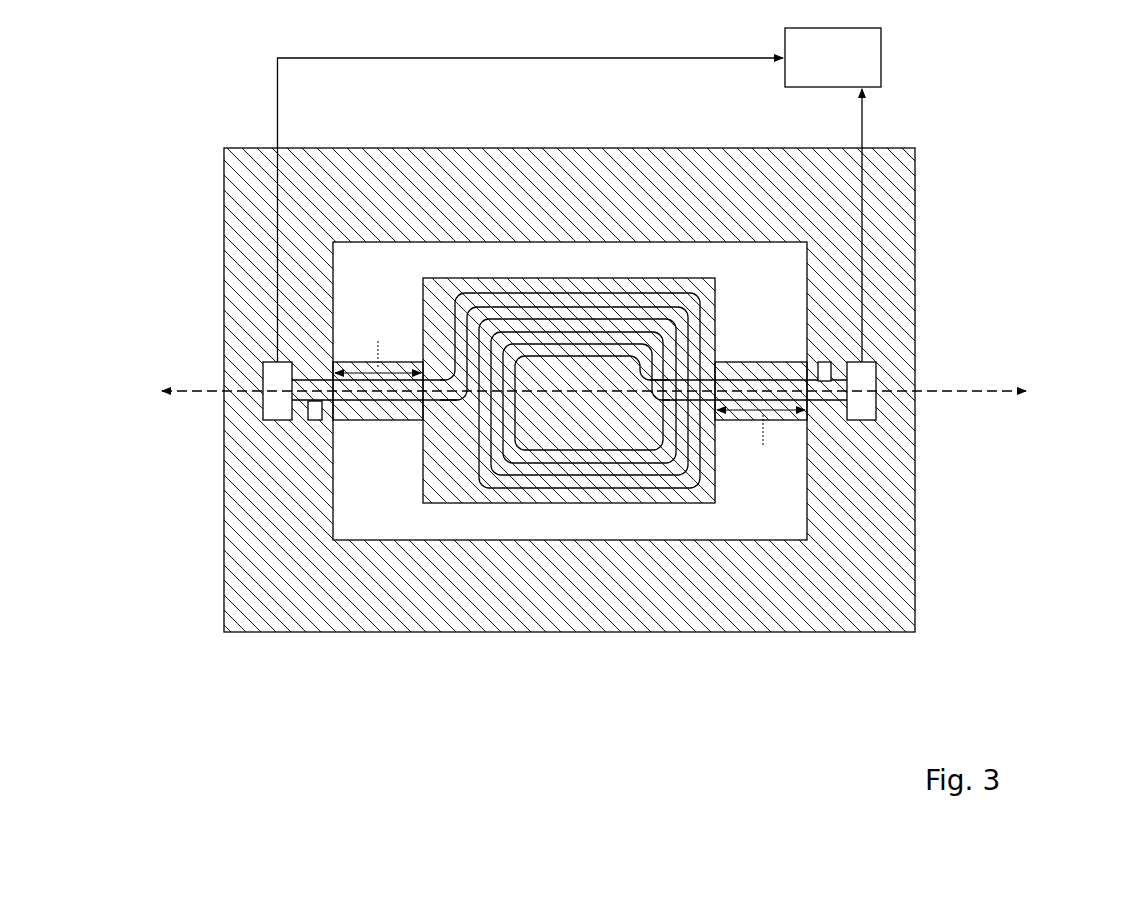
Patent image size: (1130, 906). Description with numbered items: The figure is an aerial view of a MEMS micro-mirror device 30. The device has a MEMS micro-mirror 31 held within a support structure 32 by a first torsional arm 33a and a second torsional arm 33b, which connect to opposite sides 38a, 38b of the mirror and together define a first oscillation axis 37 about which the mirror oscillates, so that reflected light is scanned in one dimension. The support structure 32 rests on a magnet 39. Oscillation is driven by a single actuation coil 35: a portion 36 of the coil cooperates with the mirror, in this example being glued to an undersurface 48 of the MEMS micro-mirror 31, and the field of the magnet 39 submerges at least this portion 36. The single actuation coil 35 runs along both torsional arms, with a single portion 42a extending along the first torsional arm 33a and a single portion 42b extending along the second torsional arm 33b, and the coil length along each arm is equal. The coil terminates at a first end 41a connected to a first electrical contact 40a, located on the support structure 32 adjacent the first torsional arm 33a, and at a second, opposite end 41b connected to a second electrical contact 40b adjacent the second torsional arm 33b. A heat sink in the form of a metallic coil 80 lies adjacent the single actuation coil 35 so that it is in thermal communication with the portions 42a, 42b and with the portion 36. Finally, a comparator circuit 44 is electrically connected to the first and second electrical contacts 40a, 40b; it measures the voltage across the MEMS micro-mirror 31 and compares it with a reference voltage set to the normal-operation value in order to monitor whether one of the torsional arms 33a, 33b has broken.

The MEMS micro-mirror device 30 is at (635, 380).
The MEMS micro-mirror 31 is at (672, 495).
The support structure 32 is at (862, 620).
The first torsional arm 33a is at (407, 422).
The second torsional arm 33b is at (745, 425).
The single actuation coil 35 is at (382, 420).
The portion of the single actuation coil 36 is at (573, 278).
The first oscillation axis 37 is at (973, 393).
The first side of the MEMS micro-mirror 38a is at (418, 472).
The second side of the MEMS micro-mirror 38b is at (720, 470).
The magnet 39 is at (355, 257).
The first electrical contact 40a is at (268, 373).
The second electrical contact 40b is at (876, 373).
The first end of the single actuation coil 41a is at (335, 372).
The second end of the single actuation coil 41b is at (835, 410).
The portion of the single actuation coil extending along the first torsional arm 42a is at (343, 378).
The portion of the single actuation coil extending along the second torsional arm 42b is at (755, 380).
The comparator circuit 44 is at (820, 72).
The undersurface of the MEMS micro-mirror 48 is at (457, 485).
The metallic coil 80 is at (312, 422).